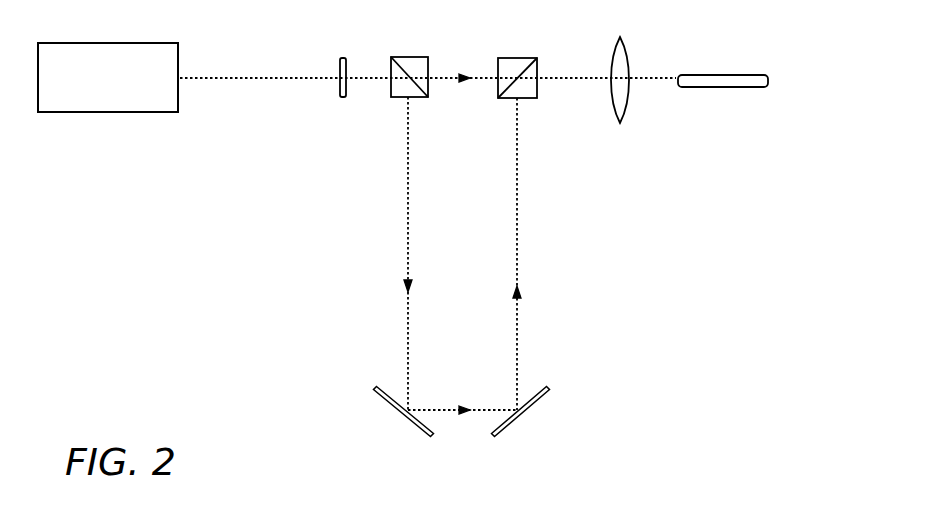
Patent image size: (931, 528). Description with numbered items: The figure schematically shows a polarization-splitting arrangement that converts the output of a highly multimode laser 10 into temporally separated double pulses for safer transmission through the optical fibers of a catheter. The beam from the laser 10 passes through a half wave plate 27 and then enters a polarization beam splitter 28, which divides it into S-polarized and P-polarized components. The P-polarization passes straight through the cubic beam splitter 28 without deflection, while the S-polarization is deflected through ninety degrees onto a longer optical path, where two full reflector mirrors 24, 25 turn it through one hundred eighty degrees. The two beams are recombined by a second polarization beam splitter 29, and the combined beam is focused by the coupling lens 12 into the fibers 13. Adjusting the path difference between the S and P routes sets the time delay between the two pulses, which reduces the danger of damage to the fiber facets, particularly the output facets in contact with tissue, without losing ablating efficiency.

The highly multimode laser 10 is at (107, 112).
The half wave plate 27 is at (343, 97).
The polarization beam splitter 28 is at (427, 100).
The second polarization beam splitter 29 is at (532, 100).
The coupling lens 12 is at (620, 123).
The fibers 13 is at (722, 87).
The full reflector mirror 24 is at (410, 425).
The full reflector mirror 25 is at (513, 427).